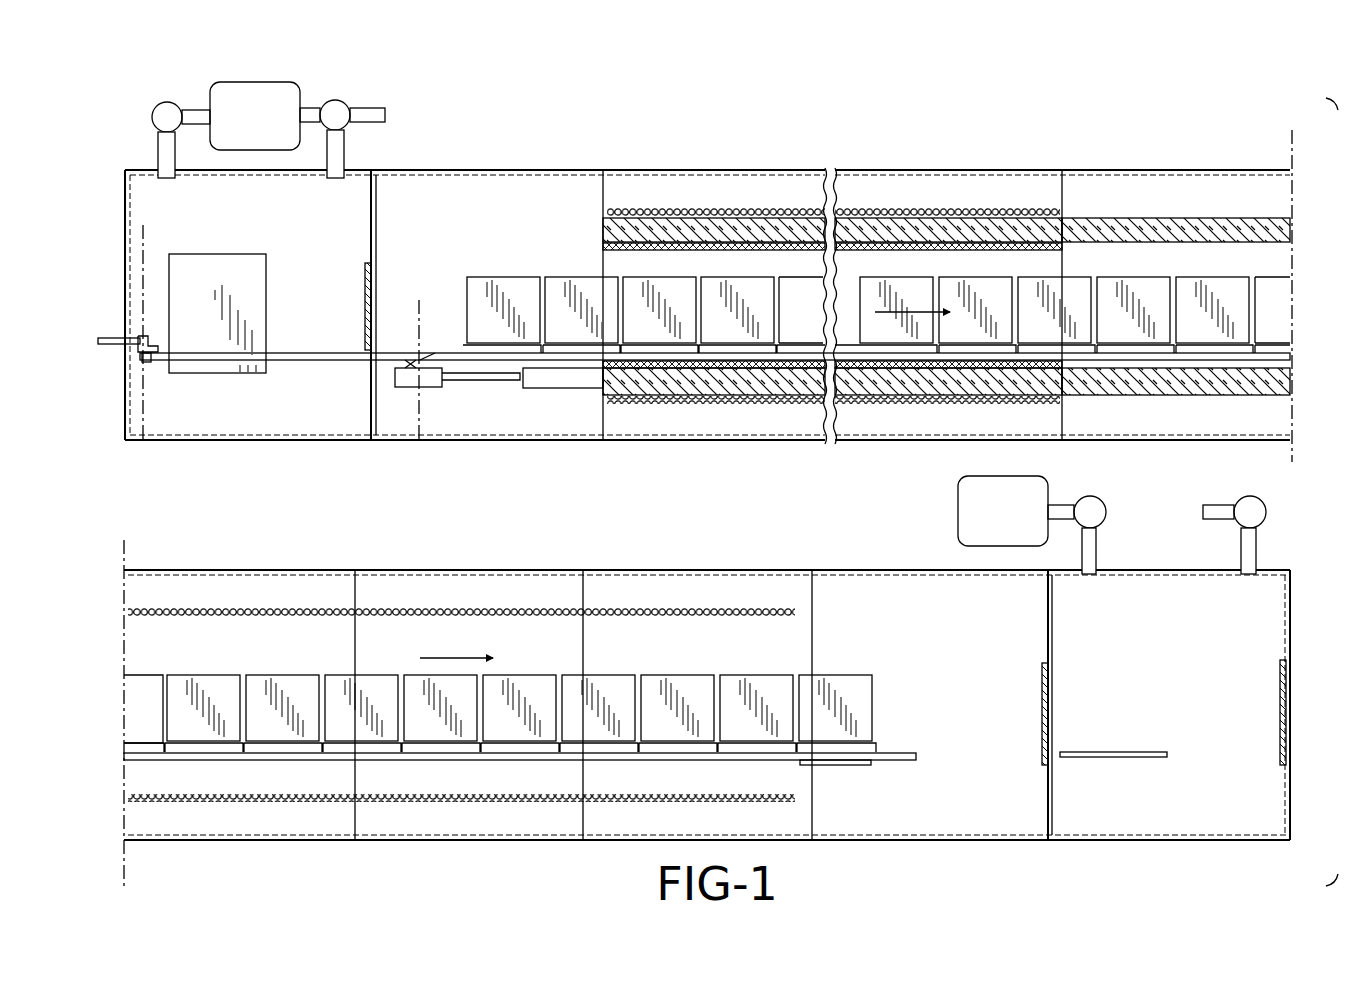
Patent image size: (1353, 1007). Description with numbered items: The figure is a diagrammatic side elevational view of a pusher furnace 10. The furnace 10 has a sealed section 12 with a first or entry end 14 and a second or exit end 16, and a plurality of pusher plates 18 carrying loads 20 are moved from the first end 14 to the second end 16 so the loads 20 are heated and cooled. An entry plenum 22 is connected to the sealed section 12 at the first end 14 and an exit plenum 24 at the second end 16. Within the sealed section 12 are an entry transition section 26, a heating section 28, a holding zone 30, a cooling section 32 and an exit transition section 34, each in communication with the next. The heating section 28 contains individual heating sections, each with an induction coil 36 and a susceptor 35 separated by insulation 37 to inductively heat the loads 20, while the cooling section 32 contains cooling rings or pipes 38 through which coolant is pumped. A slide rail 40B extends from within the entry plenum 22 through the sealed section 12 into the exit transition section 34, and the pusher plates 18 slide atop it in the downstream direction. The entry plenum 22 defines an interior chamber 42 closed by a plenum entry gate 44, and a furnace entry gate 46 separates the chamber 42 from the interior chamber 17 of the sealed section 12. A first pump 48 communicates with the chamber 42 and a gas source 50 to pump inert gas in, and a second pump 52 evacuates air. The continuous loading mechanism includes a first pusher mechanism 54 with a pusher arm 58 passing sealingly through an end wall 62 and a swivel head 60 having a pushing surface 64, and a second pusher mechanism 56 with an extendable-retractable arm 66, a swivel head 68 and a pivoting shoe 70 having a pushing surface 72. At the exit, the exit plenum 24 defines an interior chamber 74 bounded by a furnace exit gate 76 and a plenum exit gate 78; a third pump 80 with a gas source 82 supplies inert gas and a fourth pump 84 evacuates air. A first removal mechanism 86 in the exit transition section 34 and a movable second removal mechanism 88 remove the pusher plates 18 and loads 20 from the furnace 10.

The pusher furnace 10 is at (850, 128).
The sealed section 12 is at (888, 158).
The first end 14 is at (373, 444).
The second end 16 is at (1048, 841).
The interior chamber 17 is at (1022, 196).
The pusher plate 18 is at (497, 352).
The load 20 is at (575, 288).
The entry plenum 22 is at (225, 446).
The exit plenum 24 is at (1158, 568).
The entry transition section 26 is at (548, 446).
The heating section 28 is at (727, 452).
The holding zone 30 is at (1168, 168).
The cooling section 32 is at (416, 569).
The exit transition section 34 is at (899, 569).
The susceptor 35 is at (770, 243).
The induction coil 36 is at (719, 206).
The insulation 37 is at (600, 216).
The cooling rings or pipes 38 is at (286, 605).
The slide rail 40B is at (325, 363).
The interior chamber 42 is at (268, 405).
The plenum entry gate 44 is at (262, 260).
The furnace entry gate 46 is at (365, 303).
The first pump 48 is at (155, 110).
The gas source 50 is at (300, 90).
The second pump 52 is at (348, 126).
The first pusher mechanism 54 is at (152, 364).
The second pusher mechanism 56 is at (498, 403).
The pusher arm 58 is at (108, 352).
The swivel head 60 is at (168, 350).
The end wall 62 is at (135, 205).
The pushing surface 64 is at (172, 345).
The extendable-retractable arm 66 is at (500, 381).
The swivel head 68 is at (432, 381).
The shoe 70 is at (410, 358).
The pushing surface 72 is at (428, 350).
The interior chamber 74 is at (1180, 800).
The furnace exit gate 76 is at (1041, 712).
The plenum exit gate 78 is at (1280, 707).
The third pump 80 is at (1101, 499).
The gas source 82 is at (958, 482).
The fourth pump 84 is at (1267, 516).
The first removal mechanism 86 is at (869, 776).
The second removal mechanism 88 is at (1121, 758).